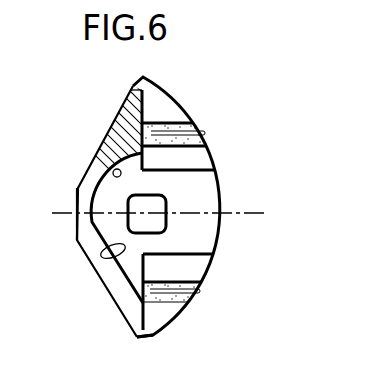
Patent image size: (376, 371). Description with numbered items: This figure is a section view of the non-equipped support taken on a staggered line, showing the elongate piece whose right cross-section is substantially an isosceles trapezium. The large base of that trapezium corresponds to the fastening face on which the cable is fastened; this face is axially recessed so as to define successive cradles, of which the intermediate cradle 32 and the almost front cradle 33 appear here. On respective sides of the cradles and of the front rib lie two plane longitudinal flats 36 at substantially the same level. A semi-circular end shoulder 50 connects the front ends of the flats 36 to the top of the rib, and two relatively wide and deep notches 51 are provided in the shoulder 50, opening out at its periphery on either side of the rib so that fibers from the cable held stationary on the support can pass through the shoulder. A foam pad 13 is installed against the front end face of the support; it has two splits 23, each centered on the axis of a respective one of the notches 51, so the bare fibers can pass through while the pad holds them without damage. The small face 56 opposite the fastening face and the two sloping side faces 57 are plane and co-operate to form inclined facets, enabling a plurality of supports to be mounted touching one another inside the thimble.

The sloping side faces 57 is at (110, 128).
The semi-circular end shoulder 50 is at (222, 197).
The foam pad 13 is at (186, 124).
The splits 23 is at (204, 137).
The longitudinal flats 36 is at (145, 314).
The notches 51 is at (196, 288).
The intermediate cradle 32 is at (96, 160).
The small face 56 is at (78, 222).
The almost front cradle 33 is at (126, 248).